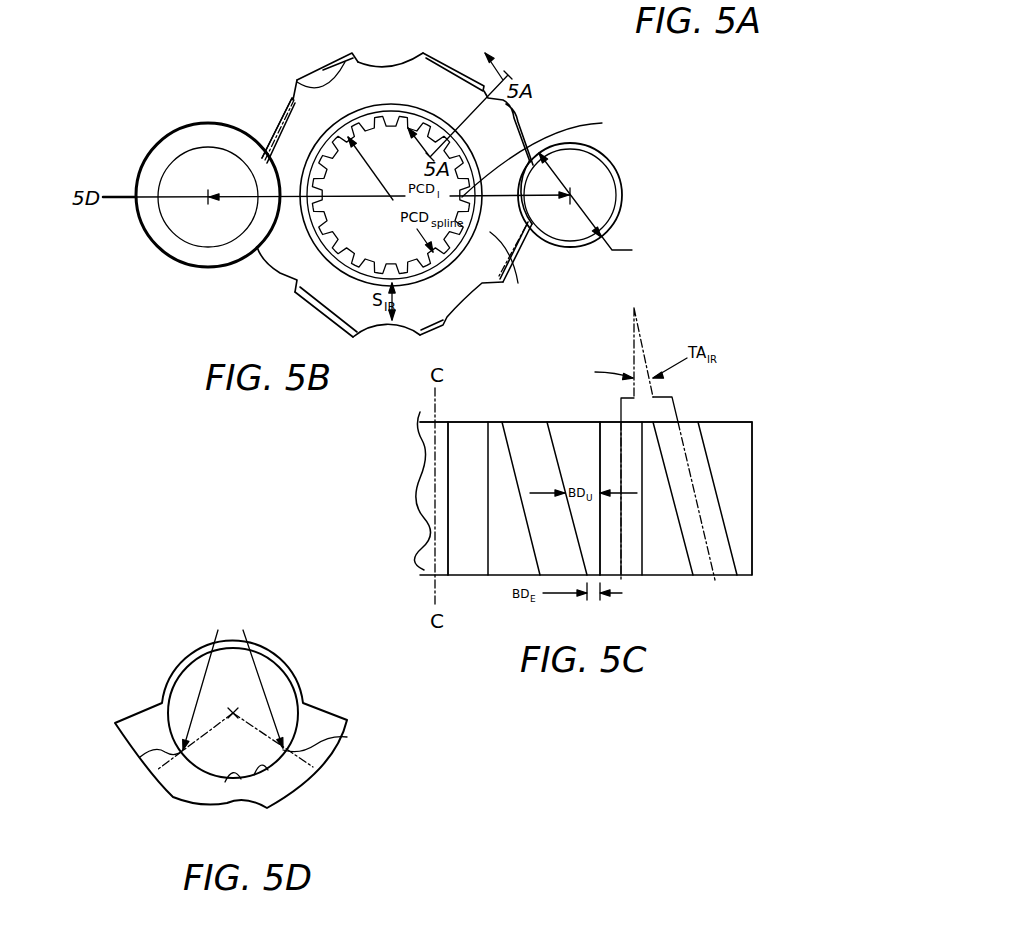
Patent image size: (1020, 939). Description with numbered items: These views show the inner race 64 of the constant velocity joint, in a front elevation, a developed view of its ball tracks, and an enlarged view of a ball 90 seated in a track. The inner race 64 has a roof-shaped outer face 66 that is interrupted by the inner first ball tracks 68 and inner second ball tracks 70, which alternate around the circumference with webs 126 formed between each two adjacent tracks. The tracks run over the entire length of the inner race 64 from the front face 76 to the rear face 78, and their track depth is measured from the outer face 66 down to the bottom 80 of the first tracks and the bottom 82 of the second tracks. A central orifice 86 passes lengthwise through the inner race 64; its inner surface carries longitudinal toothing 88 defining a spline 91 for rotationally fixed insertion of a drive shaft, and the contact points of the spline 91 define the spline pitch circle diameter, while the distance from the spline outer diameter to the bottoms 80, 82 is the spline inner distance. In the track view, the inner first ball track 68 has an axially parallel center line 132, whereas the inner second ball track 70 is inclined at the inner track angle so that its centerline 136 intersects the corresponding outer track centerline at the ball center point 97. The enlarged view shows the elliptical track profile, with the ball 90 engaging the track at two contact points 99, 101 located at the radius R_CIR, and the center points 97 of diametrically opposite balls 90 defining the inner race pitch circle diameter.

In FIG. 5B, the inner race 64 is at (354, 192).
In FIG. 5C, the inner race 64 is at (565, 408).
In FIG. 5D, the inner race 64 is at (226, 745).
In FIG. 5B, the outer face 66 is at (350, 53).
In FIG. 5D, the outer face 66 is at (330, 710).
In FIG. 5B, the inner first ball track 68 is at (407, 60).
In FIG. 5C, the inner first ball track 68 is at (462, 508).
In FIG. 5D, the inner first ball track 68 is at (262, 775).
In FIG. 5B, the inner second ball track 70 is at (315, 80).
In FIG. 5C, the inner second ball track 70 is at (528, 435).
In FIG. 5B, the front face 76 is at (507, 283).
In FIG. 5C, the front face 76 is at (742, 577).
In FIG. 5C, the rear face 78 is at (742, 420).
In FIG. 5B, the bottom of inner first ball track 80 is at (188, 147).
In FIG. 5D, the bottom of inner first ball track 80 is at (232, 775).
In FIG. 5B, the bottom of inner second ball track 82 is at (280, 117).
In FIG. 5B, the central orifice 86 is at (300, 302).
In FIG. 5B, the longitudinal toothing 88 is at (545, 153).
In FIG. 5B, the ball 90 is at (621, 170).
In FIG. 5D, the ball 90 is at (270, 655).
In FIG. 5B, the spline 91 is at (356, 246).
In FIG. 5D, the center point 97 is at (233, 713).
In FIG. 5D, the contact point 99 is at (140, 760).
In FIG. 5D, the contact point 101 is at (330, 740).
In FIG. 5C, the web 126 is at (502, 558).
In FIG. 5C, the center line of inner first ball track 132 is at (622, 553).
In FIG. 5C, the centerline of inner second ball track 136 is at (700, 520).